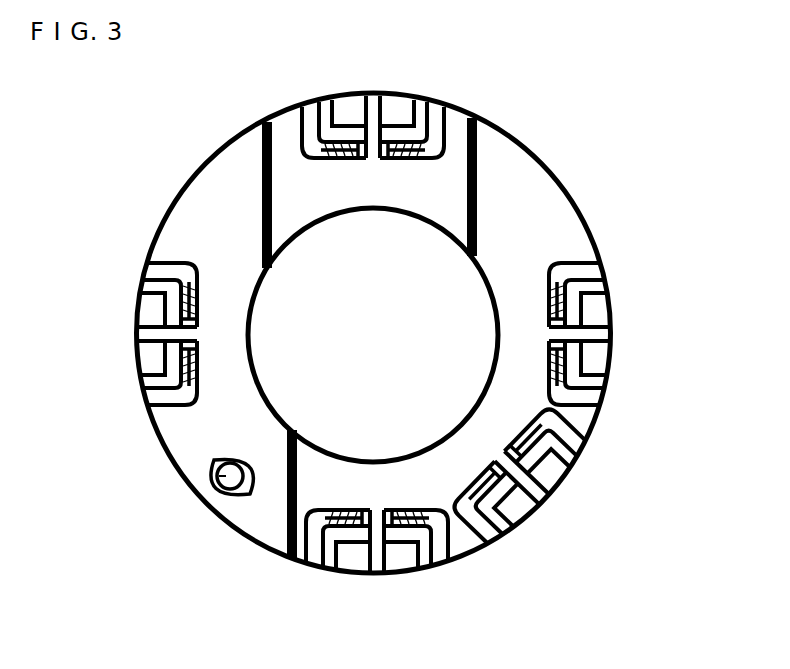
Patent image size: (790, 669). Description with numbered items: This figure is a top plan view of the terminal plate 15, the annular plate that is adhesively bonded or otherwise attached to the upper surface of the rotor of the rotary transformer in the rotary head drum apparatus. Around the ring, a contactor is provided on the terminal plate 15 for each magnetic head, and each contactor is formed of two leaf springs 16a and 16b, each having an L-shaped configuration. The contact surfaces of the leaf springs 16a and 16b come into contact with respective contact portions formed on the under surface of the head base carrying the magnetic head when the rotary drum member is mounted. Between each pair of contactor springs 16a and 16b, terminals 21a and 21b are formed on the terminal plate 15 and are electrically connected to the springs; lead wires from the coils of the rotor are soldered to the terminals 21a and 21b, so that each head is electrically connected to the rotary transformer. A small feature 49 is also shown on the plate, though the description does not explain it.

The terminal plate 15 is at (531, 156).
The leaf spring 16a is at (400, 162).
The leaf spring 16b is at (345, 162).
The terminal 21a is at (395, 103).
The terminal 21b is at (350, 103).
The locating hole / lens 49 is at (218, 478).